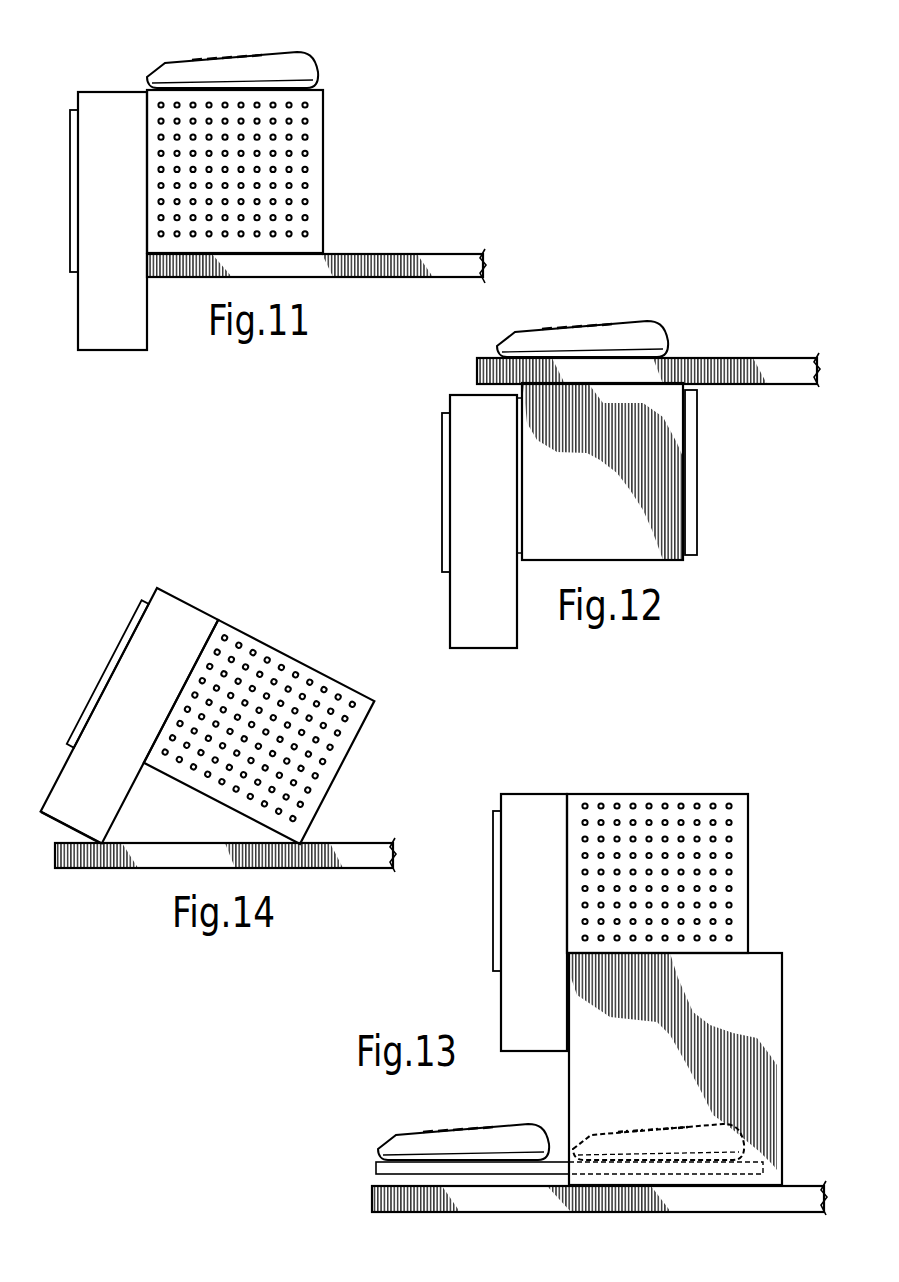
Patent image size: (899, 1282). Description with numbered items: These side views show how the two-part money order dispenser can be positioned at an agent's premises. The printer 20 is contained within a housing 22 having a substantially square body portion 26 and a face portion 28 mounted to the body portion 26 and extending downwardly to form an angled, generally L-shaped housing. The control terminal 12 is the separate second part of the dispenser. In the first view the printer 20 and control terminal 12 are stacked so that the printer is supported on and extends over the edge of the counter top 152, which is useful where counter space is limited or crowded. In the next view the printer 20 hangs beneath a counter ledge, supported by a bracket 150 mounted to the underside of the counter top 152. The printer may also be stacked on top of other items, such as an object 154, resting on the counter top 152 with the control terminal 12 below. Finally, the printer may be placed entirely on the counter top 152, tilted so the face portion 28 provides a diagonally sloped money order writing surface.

In FIG. 11, the control terminal 12 is at (317, 70).
In FIG. 12, the control terminal 12 is at (657, 325).
In FIG. 13, the control terminal 12 is at (412, 1134).
In FIG. 11, the printer 20 is at (323, 123).
In FIG. 12, the printer 20 is at (442, 500).
In FIG. 14, the printer 20 is at (102, 667).
In FIG. 13, the printer 20 is at (493, 929).
In FIG. 11, the housing 22 is at (103, 92).
In FIG. 12, the housing 22 is at (458, 395).
In FIG. 14, the housing 22 is at (180, 598).
In FIG. 13, the housing 22 is at (543, 794).
In FIG. 11, the body portion 26 is at (298, 178).
In FIG. 12, the body portion 26 is at (697, 477).
In FIG. 14, the body portion 26 is at (335, 727).
In FIG. 13, the body portion 26 is at (679, 806).
In FIG. 11, the face portion 28 is at (115, 350).
In FIG. 12, the face portion 28 is at (458, 627).
In FIG. 14, the face portion 28 is at (68, 787).
In FIG. 13, the face portion 28 is at (503, 1009).
In FIG. 12, the bracket 150 is at (657, 545).
In FIG. 11, the counter top 152 is at (447, 256).
In FIG. 12, the counter top 152 is at (797, 358).
In FIG. 14, the counter top 152 is at (360, 870).
In FIG. 13, the counter top 152 is at (372, 1190).
In FIG. 13, the enclosure 154 is at (772, 959).